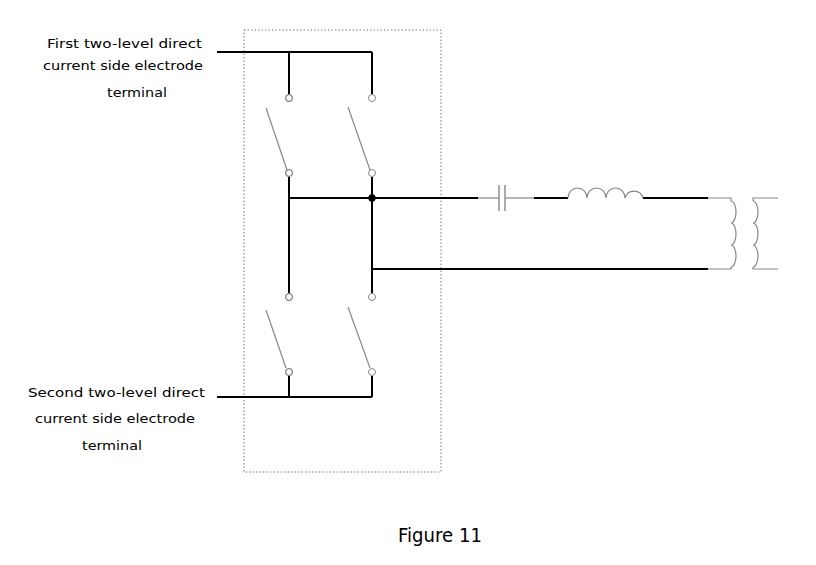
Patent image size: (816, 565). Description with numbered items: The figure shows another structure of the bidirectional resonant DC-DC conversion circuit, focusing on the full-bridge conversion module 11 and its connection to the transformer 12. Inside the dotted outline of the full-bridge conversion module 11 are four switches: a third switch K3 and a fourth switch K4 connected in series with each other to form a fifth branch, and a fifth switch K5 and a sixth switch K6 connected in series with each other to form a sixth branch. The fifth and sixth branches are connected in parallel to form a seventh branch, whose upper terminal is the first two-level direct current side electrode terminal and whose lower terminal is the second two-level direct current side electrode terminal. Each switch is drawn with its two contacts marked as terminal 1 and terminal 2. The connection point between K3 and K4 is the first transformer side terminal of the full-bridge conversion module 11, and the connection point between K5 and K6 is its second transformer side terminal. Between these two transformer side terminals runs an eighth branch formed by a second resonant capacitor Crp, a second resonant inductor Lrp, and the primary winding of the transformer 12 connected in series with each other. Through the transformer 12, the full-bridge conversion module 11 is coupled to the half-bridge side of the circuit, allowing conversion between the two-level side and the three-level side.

The full-bridge conversion module 11 is at (462, 251).
The transformer 12 is at (737, 197).
The first switch terminal 1 is at (277, 203).
The second switch terminal 2 is at (275, 280).
The third switch K3 is at (295, 139).
The fourth switch K4 is at (294, 339).
The fifth switch K5 is at (378, 138).
The sixth switch K6 is at (378, 337).
The second resonant capacitor Crp is at (506, 187).
The second resonant inductor Lrp is at (621, 181).